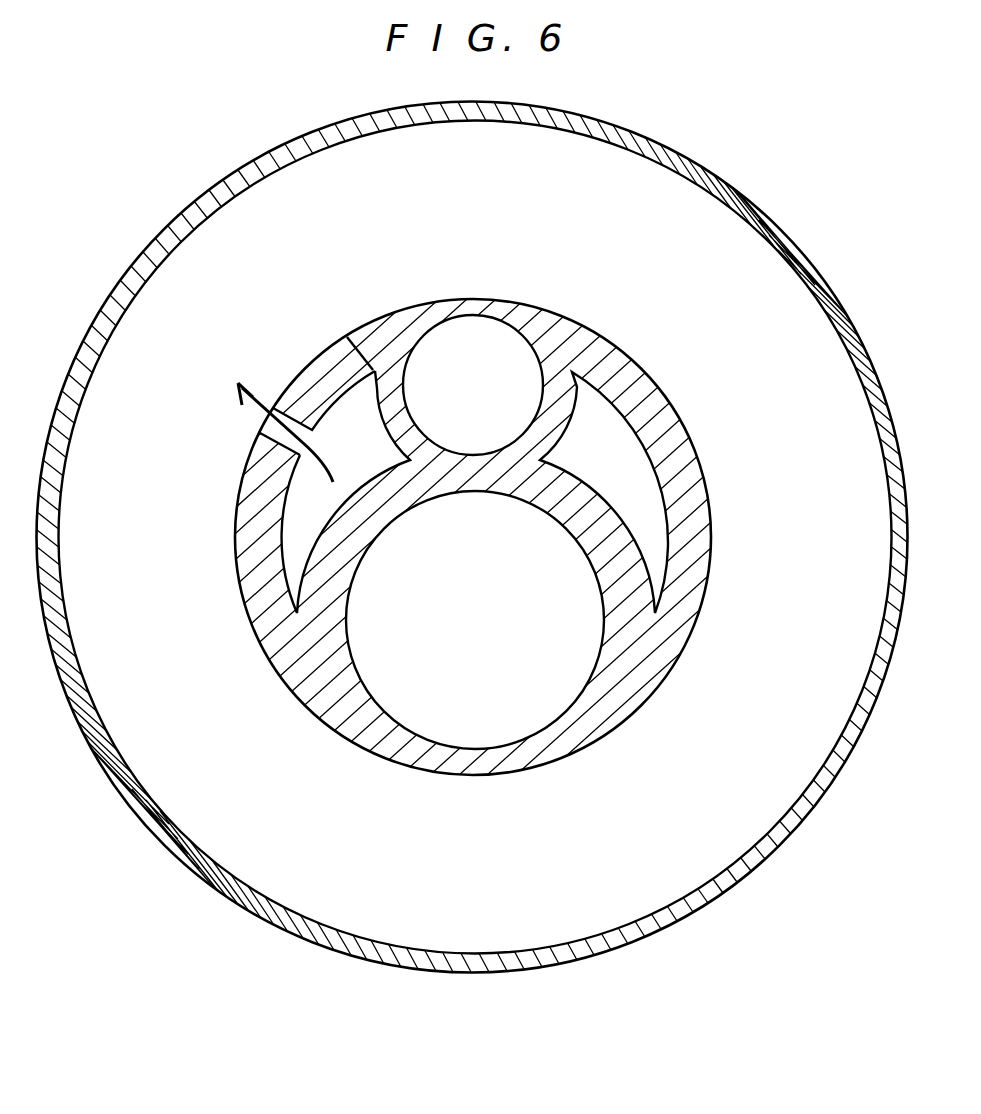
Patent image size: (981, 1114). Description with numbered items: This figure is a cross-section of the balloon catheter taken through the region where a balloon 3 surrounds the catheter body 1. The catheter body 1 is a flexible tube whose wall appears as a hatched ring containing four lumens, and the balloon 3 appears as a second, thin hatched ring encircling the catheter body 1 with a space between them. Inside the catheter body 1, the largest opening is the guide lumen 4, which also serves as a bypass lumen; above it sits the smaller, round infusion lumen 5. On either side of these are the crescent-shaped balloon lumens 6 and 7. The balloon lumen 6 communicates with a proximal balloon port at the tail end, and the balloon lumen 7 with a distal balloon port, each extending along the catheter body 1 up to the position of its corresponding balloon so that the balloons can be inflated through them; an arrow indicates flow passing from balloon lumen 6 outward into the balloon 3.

The catheter body 1 is at (643, 357).
The balloon 3 is at (726, 181).
The guide lumen 4 is at (508, 700).
The infusion lumen 5 is at (487, 358).
The balloon lumen 6 is at (372, 422).
The balloon lumen 7 is at (625, 463).